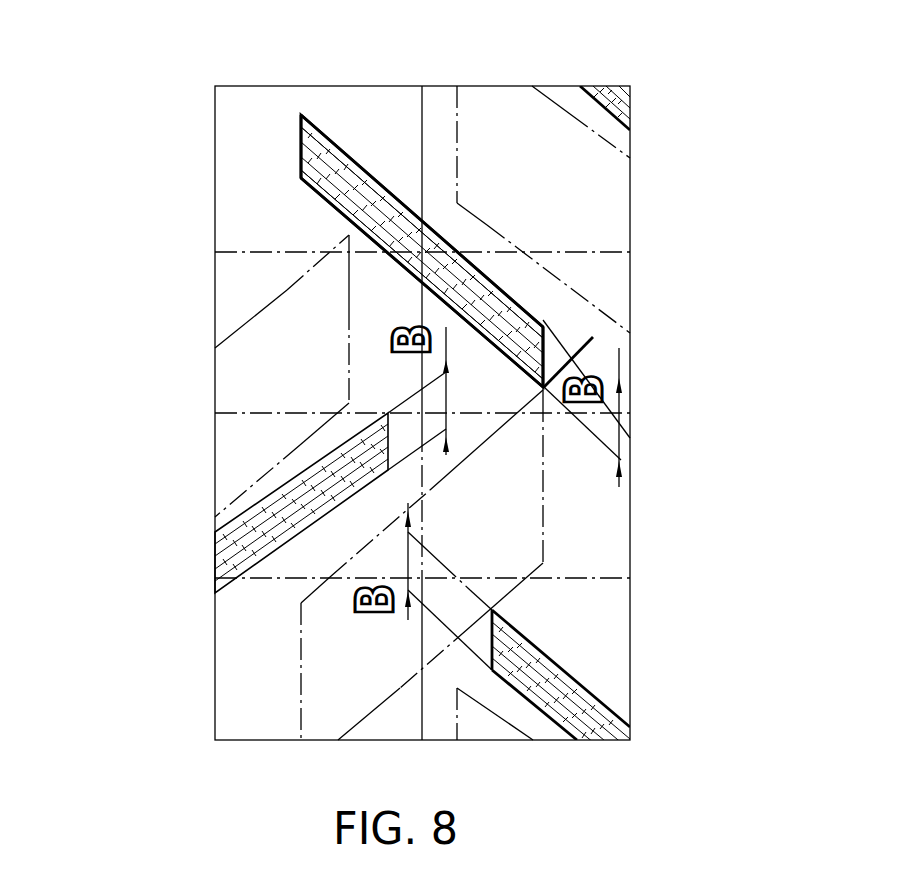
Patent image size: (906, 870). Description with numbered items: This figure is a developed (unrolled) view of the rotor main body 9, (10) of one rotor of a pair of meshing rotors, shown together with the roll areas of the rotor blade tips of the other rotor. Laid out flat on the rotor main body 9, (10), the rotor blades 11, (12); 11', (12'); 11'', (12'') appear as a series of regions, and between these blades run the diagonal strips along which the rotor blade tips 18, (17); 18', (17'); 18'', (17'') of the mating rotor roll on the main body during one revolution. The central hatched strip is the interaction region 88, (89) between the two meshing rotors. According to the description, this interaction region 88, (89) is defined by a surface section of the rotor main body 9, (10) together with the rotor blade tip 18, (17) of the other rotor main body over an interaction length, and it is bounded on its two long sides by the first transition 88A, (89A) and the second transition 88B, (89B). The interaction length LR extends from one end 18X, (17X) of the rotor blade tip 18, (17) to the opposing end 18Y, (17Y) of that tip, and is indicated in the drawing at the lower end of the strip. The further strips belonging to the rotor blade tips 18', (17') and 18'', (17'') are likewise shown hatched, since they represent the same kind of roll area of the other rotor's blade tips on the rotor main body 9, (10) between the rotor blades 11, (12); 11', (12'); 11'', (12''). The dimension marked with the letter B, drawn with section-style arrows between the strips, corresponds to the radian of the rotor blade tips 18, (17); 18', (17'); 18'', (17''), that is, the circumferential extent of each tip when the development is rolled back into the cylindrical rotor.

The rotor main body 9 is at (356, 413).
The rotor main body 10 is at (259, 225).
The rotor blade 11 is at (422, 565).
The rotor blade 12 is at (422, 565).
The rotor blade 11' is at (282, 376).
The rotor blade 12' is at (282, 376).
The rotor blade 11'' is at (543, 209).
The rotor blade 12'' is at (543, 209).
The rotor blade tip 18 is at (312, 248).
The rotor blade tip 17 is at (312, 248).
The end of rotor blade tip 18X is at (291, 106).
The end of rotor blade tip 17X is at (320, 97).
The opposing end of rotor blade tip 18Y is at (650, 358).
The opposing end of rotor blade tip 17Y is at (544, 387).
The rotor blade tip 18' is at (634, 429).
The rotor blade tip 17' is at (634, 429).
The rotor blade tip 18'' is at (233, 503).
The rotor blade tip 17'' is at (233, 503).
The interaction region 88 is at (529, 253).
The interaction region 89 is at (464, 286).
The first transition 88A is at (445, 176).
The first transition 89A is at (387, 185).
The second transition 88B is at (289, 282).
The second transition 89B is at (328, 200).
The interaction length LR is at (588, 344).